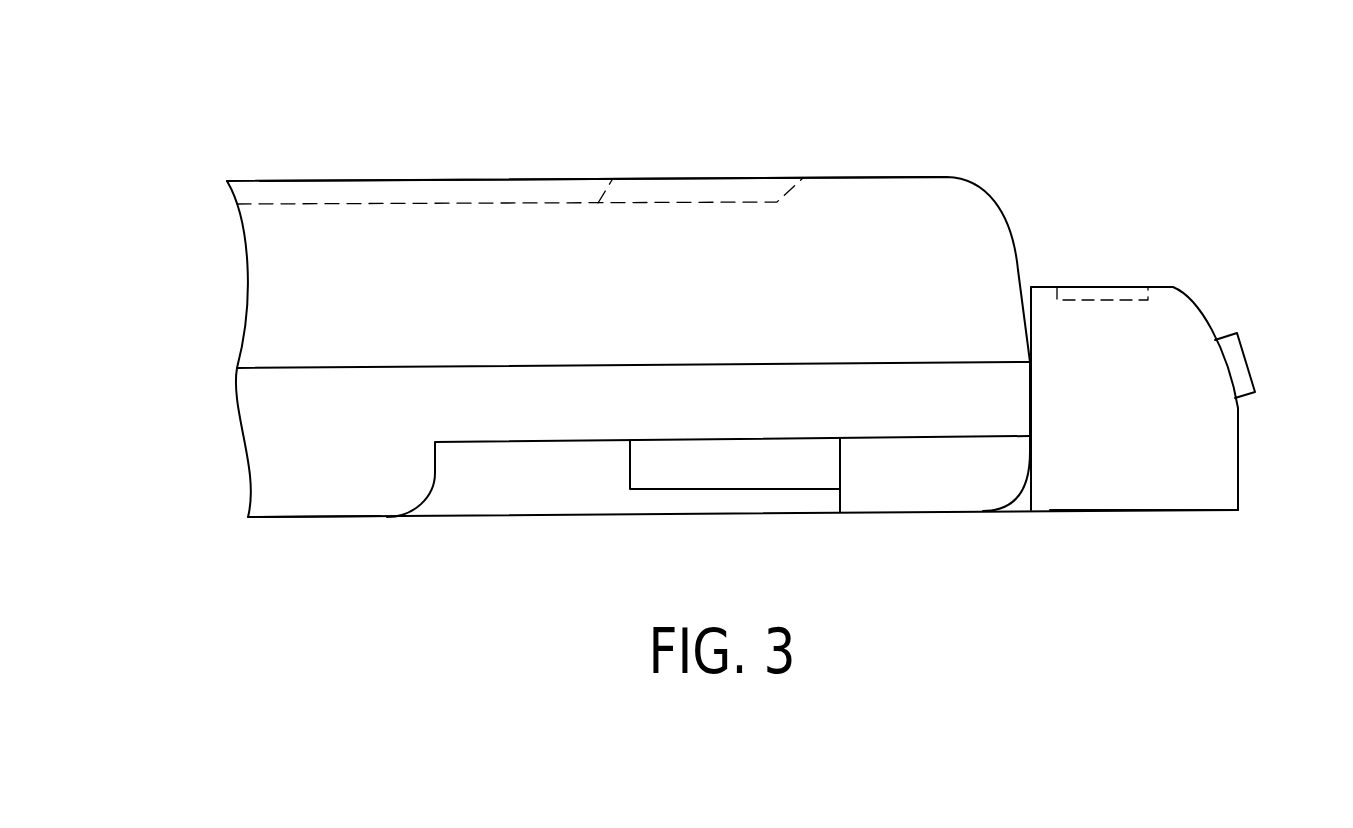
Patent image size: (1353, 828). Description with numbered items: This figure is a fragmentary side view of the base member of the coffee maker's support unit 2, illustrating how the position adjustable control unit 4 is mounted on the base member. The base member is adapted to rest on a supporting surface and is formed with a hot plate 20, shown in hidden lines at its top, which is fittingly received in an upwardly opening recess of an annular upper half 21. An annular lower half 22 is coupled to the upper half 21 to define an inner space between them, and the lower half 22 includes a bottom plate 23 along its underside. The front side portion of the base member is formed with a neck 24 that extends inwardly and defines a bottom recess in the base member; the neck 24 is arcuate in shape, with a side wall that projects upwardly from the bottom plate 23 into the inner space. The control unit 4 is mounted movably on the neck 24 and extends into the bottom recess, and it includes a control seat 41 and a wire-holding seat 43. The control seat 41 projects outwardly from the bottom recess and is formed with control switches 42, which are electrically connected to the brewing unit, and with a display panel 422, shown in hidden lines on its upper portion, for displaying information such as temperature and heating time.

The support unit 2 is at (847, 176).
The hot plate 20 is at (600, 200).
The annular upper half 21 is at (270, 333).
The annular lower half 22 is at (270, 468).
The bottom plate 23 is at (418, 500).
The neck 24 is at (572, 427).
The position adjustable control unit 4 is at (1178, 284).
The control seat 41 is at (1197, 458).
The control switches 42 is at (1243, 345).
The display panel 422 is at (1102, 287).
The wire-holding seat 43 is at (935, 480).